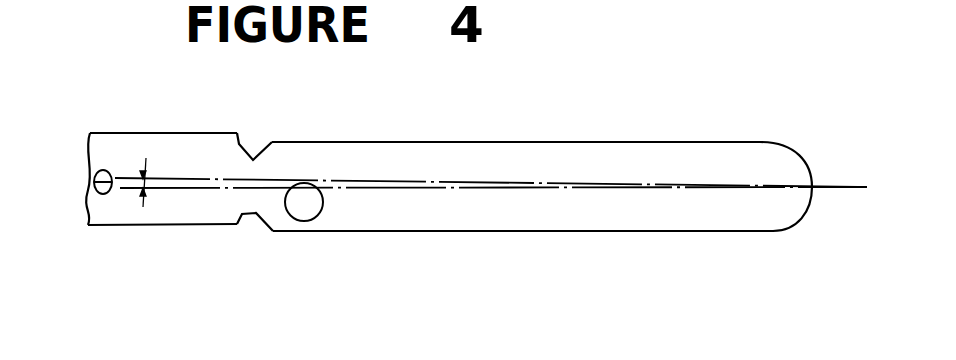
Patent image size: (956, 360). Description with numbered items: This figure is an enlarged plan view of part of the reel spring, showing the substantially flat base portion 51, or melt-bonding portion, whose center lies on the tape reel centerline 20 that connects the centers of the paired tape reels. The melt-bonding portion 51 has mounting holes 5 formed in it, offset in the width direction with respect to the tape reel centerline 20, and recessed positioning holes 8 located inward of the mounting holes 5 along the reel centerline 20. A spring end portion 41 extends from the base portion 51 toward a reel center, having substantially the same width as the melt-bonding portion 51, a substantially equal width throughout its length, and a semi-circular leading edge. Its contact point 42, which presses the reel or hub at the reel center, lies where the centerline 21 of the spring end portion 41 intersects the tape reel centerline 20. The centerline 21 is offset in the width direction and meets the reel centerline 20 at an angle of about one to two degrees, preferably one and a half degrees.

The base portion 51 is at (176, 150).
The positioning holes 8 is at (260, 153).
The spring end portion 41 is at (570, 210).
The contact point 42 is at (745, 182).
The tape reel centerline 20 is at (380, 170).
The centerline of the spring end portion 21 is at (177, 188).
The mounting holes 5 is at (315, 216).